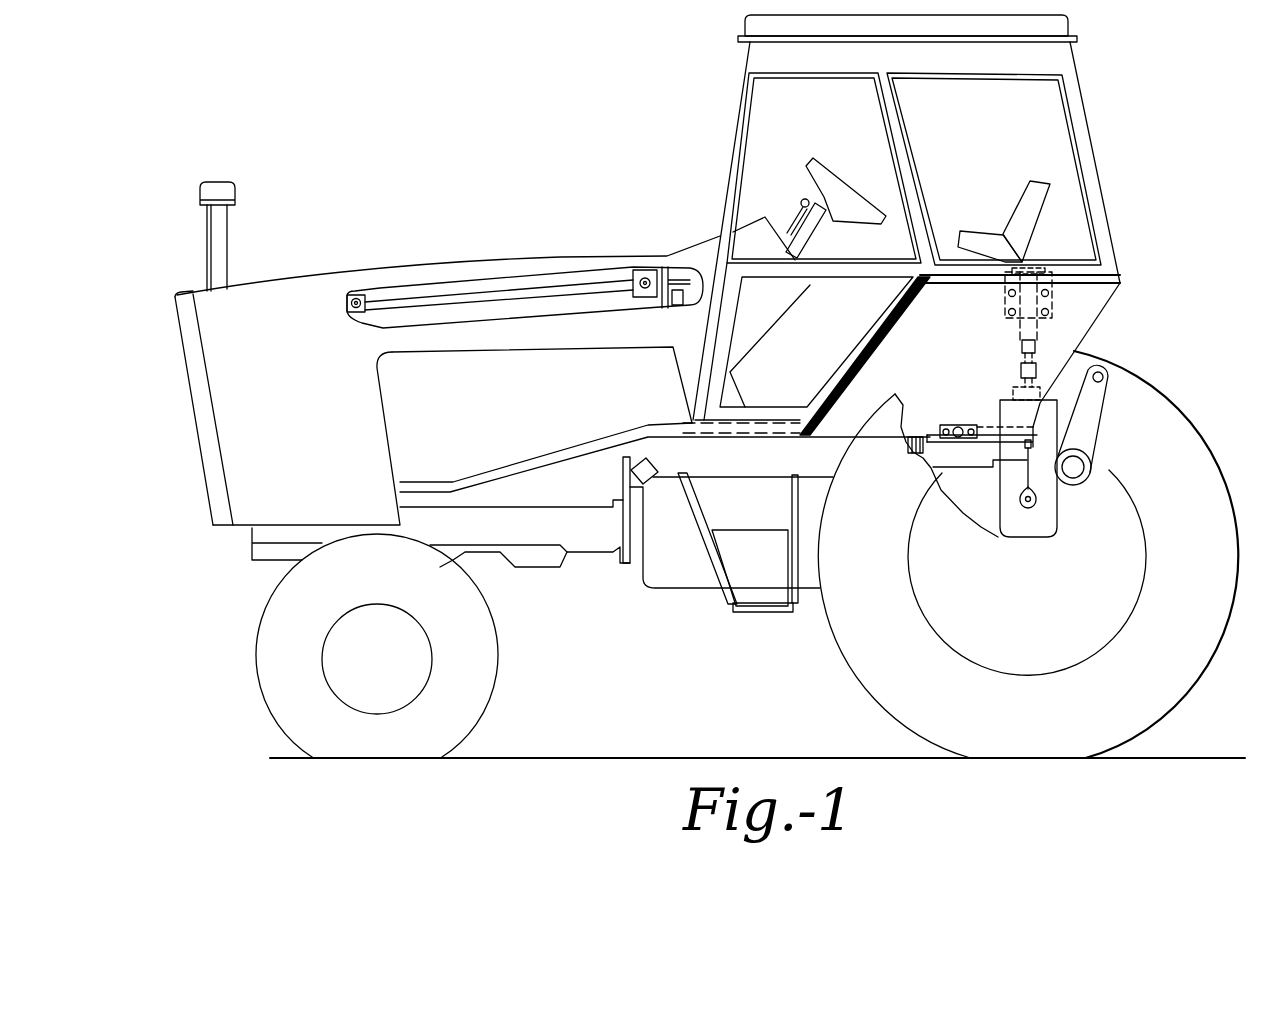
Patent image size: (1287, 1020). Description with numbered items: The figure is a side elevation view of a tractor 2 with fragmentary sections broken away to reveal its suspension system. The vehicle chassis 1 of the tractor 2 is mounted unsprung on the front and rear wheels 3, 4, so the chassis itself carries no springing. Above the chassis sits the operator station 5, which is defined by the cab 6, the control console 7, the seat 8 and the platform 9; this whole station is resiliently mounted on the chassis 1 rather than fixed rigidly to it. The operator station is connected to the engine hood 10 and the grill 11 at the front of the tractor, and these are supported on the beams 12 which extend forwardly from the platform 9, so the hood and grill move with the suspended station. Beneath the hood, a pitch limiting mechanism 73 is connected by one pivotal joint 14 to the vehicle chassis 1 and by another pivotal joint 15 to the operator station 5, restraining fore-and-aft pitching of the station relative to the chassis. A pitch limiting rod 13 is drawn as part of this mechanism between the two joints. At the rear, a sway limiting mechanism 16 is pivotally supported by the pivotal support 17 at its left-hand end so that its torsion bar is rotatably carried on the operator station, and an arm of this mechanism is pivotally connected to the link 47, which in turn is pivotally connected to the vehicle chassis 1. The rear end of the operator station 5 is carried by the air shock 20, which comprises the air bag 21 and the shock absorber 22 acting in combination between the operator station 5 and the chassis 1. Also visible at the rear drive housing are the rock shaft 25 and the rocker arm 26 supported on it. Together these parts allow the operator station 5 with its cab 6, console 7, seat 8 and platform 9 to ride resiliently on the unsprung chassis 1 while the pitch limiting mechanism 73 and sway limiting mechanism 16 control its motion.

The vehicle chassis 1 is at (577, 534).
The tractor 2 is at (1103, 328).
The wheel 3 is at (492, 636).
The wheel 4 is at (843, 648).
The operator station 5 is at (1090, 134).
The cab 6 is at (738, 112).
The control console 7 is at (773, 333).
The seat 8 is at (1036, 217).
The platform 9 is at (803, 440).
The engine hood 10 is at (310, 273).
The grill 11 is at (197, 365).
The beams 12 is at (547, 453).
The piston rod 13 is at (515, 300).
The pivotal joint 14 is at (359, 295).
The pivotal joint 15 is at (645, 280).
The sway limiting mechanism 16 is at (966, 444).
The pivotal support 17 is at (958, 436).
The air shock 20 is at (1018, 330).
The air bag 21 is at (1036, 347).
The shock absorber 22 is at (1020, 363).
The rock shaft 25 is at (1082, 467).
The rocker arm 26 is at (1096, 418).
The link 47 is at (1030, 478).
The pitch limiting mechanism 73 is at (471, 282).